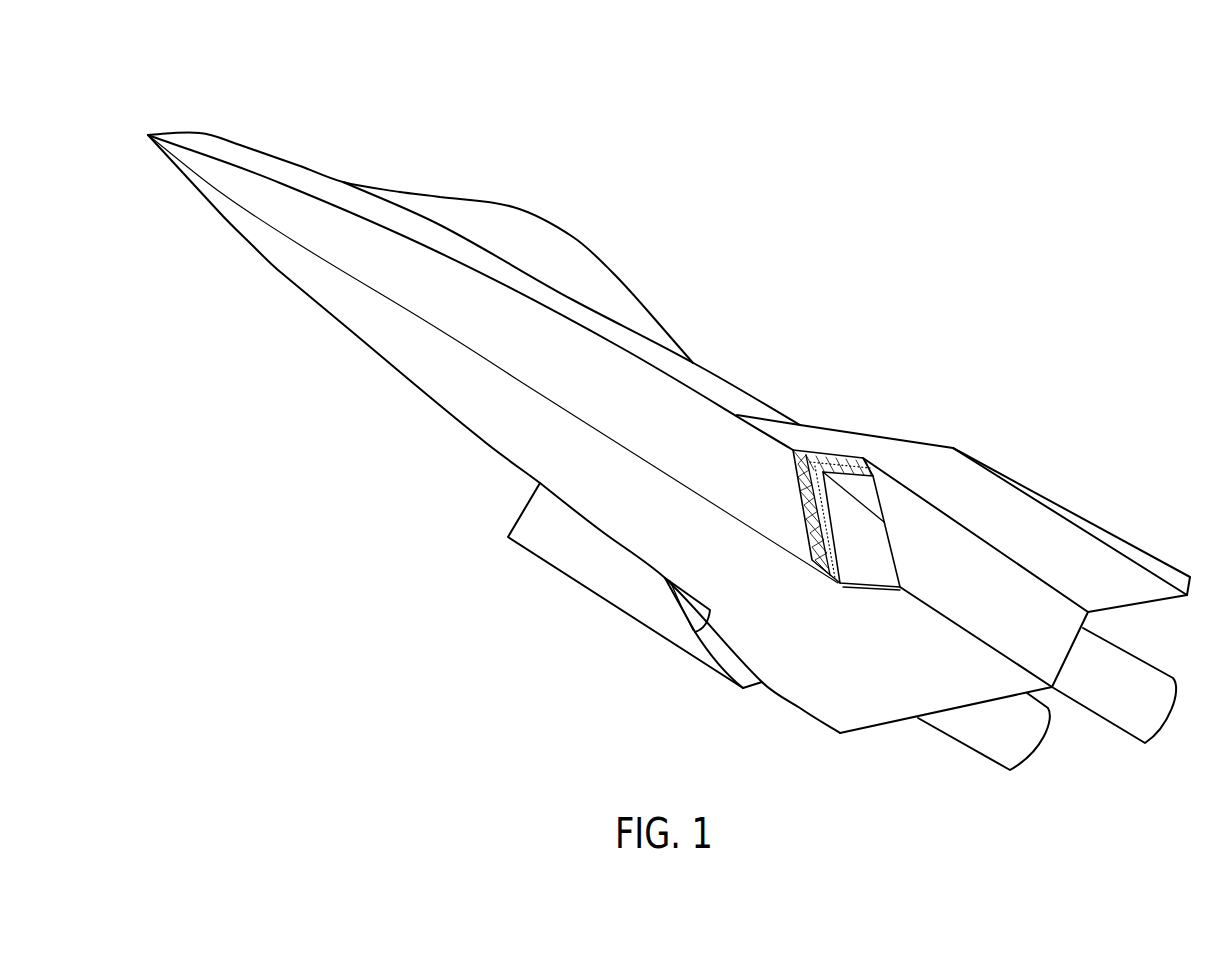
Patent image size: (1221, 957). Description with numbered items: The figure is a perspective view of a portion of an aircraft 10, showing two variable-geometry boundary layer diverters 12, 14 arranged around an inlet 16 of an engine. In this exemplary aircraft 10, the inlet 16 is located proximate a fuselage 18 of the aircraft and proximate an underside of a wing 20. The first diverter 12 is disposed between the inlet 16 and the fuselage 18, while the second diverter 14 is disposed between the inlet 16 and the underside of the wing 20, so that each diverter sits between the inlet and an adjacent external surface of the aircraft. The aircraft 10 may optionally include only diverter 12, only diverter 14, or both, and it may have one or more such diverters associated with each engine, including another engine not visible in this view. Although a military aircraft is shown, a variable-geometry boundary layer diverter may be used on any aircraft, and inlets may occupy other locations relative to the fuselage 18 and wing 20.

The aircraft 10 is at (669, 408).
The variable-geometry boundary layer diverter 12 is at (802, 488).
The variable-geometry boundary layer diverter 14 is at (837, 462).
The inlet 16 is at (862, 570).
The fuselage 18 is at (683, 415).
The wing 20 is at (1063, 510).